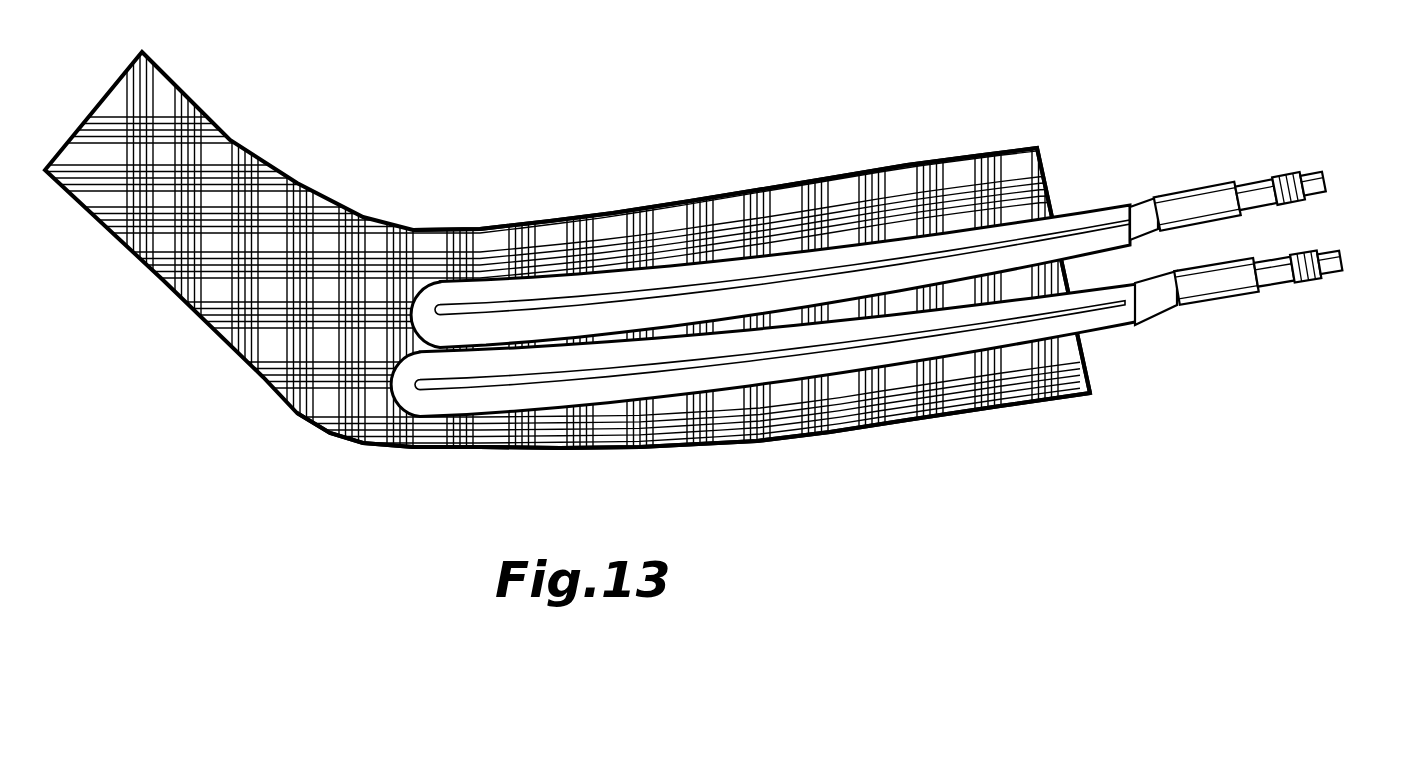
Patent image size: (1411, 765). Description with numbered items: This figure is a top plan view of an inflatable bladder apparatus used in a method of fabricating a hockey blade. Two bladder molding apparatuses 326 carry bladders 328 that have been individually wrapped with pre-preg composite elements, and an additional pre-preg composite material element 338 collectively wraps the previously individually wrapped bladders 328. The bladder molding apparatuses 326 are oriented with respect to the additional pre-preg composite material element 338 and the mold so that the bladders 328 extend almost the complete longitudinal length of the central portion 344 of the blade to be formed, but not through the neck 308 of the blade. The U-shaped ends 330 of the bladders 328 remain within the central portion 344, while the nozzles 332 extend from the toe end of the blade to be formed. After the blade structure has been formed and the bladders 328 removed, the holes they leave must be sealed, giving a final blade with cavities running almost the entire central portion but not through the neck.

The neck 308 is at (284, 124).
The additional pre-preg composite material element 338 is at (923, 146).
The central portion 344 is at (840, 468).
The U-shaped ends 330 is at (386, 307).
The bladders 328 is at (1141, 190).
The bladder molding apparatuses 326 is at (1236, 162).
The nozzles 332 is at (1331, 174).